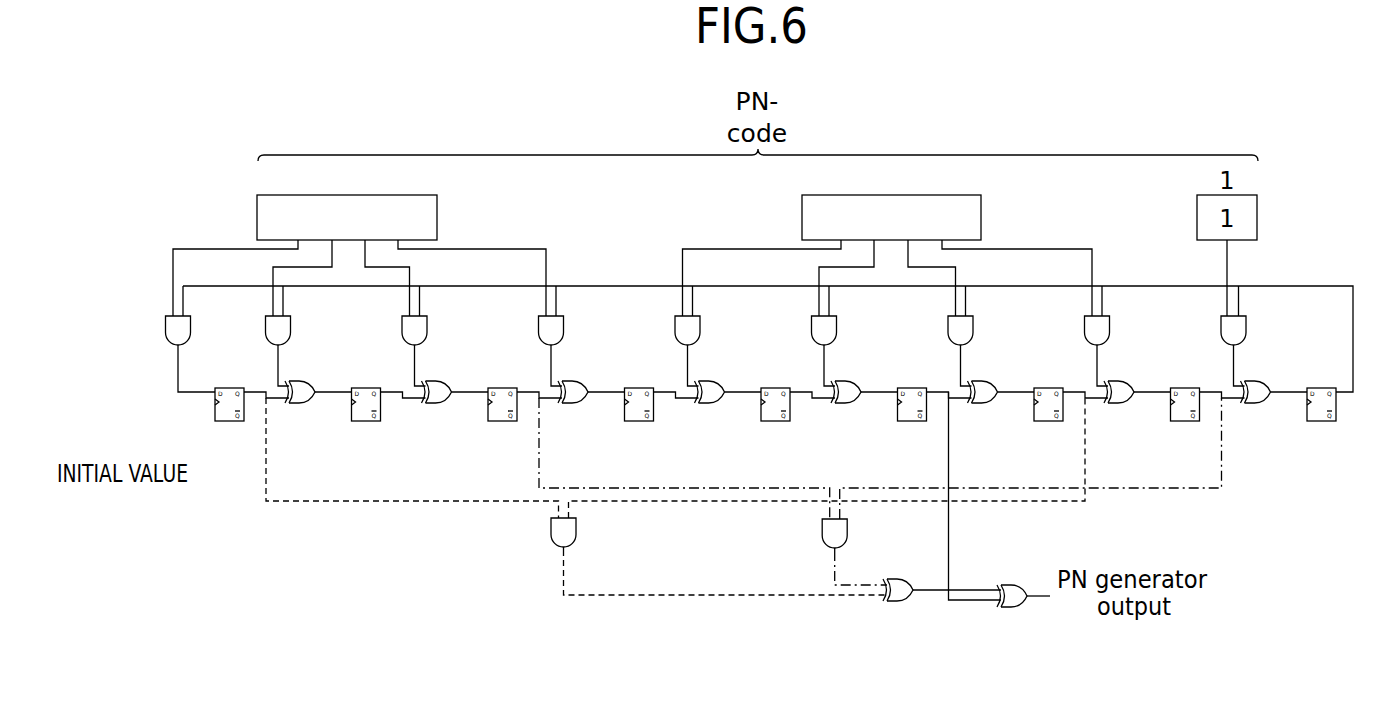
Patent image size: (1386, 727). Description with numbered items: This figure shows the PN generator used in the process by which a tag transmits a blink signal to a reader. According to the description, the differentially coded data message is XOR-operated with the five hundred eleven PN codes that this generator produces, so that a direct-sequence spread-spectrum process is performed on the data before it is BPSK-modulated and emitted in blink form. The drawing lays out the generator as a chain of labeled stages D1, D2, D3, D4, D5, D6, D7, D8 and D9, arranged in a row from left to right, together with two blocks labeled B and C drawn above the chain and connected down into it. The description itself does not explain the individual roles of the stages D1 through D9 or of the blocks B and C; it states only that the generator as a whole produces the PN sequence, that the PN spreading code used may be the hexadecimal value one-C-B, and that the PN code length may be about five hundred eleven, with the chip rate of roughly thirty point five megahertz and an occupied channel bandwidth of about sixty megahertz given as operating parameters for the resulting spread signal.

The first flip-flop D1 is at (230, 438).
The second flip-flop D2 is at (366, 438).
The third flip-flop D3 is at (503, 438).
The fourth flip-flop D4 is at (639, 438).
The fifth flip-flop D5 is at (776, 438).
The sixth flip-flop D6 is at (912, 438).
The seventh flip-flop D7 is at (1049, 438).
The eighth flip-flop D8 is at (1185, 438).
The ninth flip-flop D9 is at (1322, 438).
The PN code register B is at (347, 203).
The PN code register C is at (891, 203).